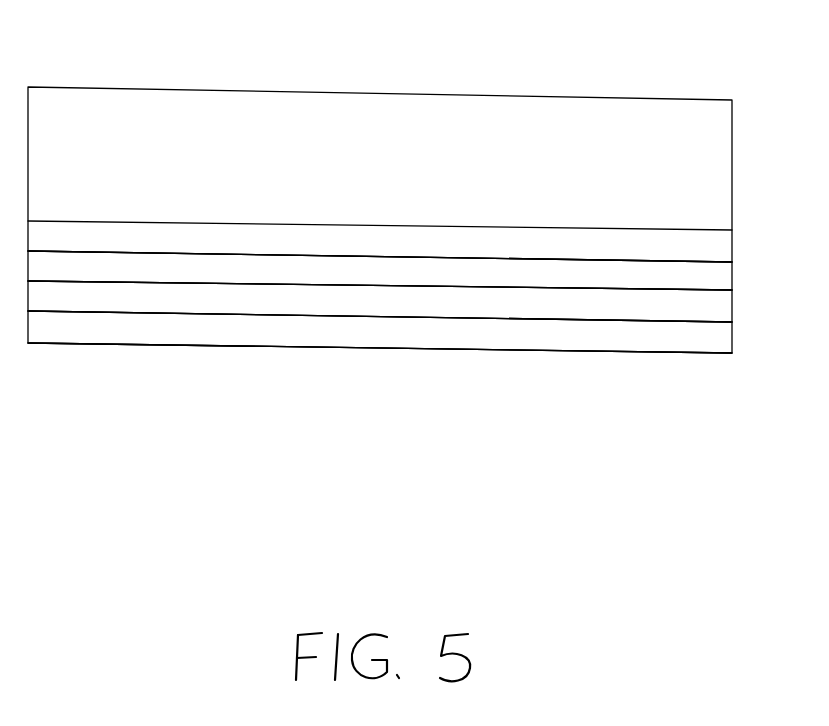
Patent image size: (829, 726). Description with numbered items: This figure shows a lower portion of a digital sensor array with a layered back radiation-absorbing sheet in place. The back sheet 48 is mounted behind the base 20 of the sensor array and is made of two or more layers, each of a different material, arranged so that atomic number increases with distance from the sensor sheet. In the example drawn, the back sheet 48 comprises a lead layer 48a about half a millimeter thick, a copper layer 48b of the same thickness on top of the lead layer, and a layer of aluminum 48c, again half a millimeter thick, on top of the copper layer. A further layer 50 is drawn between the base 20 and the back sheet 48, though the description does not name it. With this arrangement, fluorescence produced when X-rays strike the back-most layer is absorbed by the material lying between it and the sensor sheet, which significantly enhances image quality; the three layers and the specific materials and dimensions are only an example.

The base 20 is at (121, 117).
The layer 50 is at (205, 243).
The back sheet 48 is at (747, 262).
The lead layer 48a is at (380, 332).
The copper layer 48b is at (380, 301).
The layer of aluminum 48c is at (380, 270).